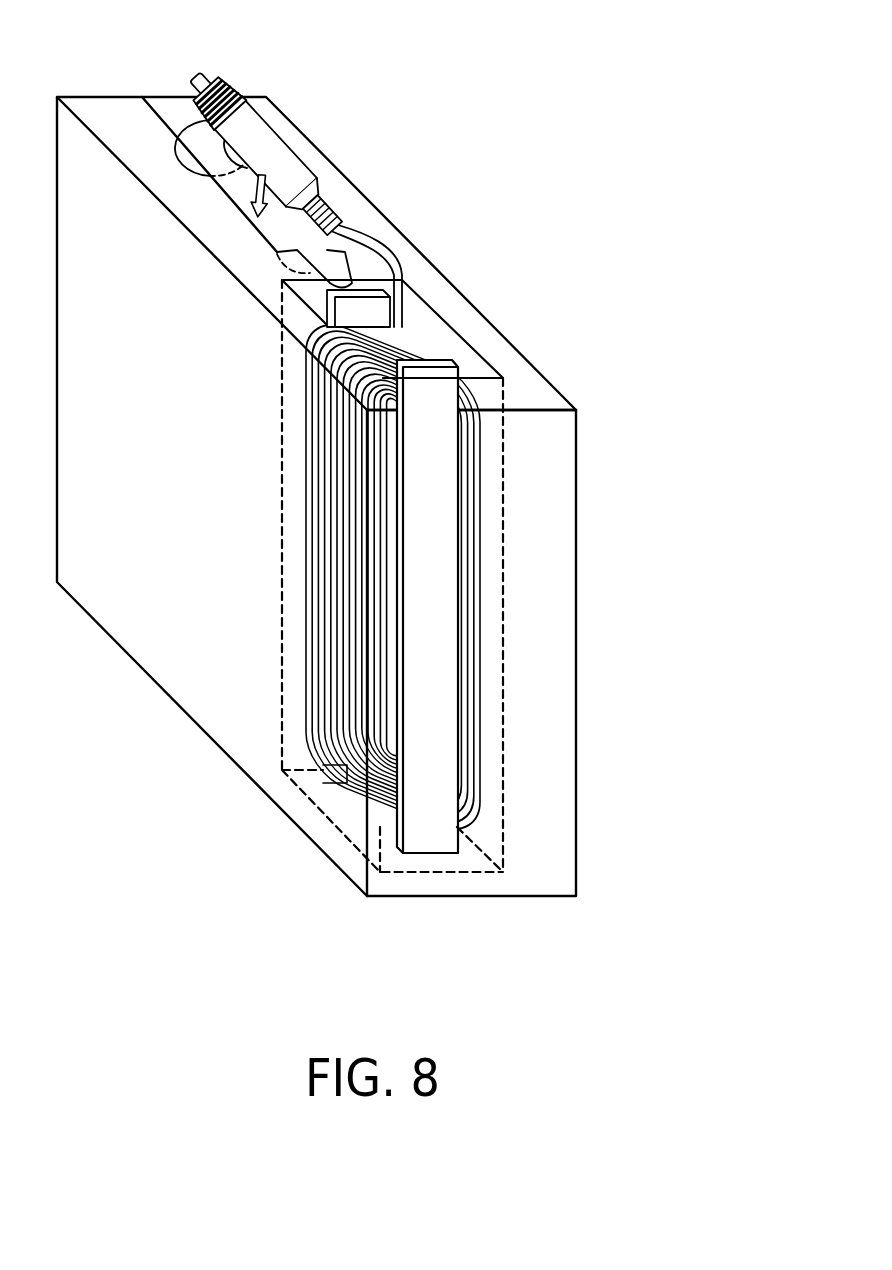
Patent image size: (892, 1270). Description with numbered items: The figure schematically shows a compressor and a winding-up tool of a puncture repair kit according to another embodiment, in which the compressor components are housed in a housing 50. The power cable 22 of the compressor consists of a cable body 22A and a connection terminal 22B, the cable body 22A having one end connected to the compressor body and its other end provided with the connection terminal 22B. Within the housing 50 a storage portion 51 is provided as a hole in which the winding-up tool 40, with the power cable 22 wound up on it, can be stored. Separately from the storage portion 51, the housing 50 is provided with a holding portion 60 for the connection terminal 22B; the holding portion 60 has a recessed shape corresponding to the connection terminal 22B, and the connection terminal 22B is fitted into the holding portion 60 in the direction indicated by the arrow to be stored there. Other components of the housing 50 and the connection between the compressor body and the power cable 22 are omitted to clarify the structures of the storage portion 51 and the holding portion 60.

The power cable 22 is at (437, 137).
The cable body 22A is at (397, 257).
The connection terminal 22B is at (287, 157).
The winding-up tool 40 is at (423, 827).
The housing 50 is at (580, 637).
The storage portion 51 is at (477, 375).
The holding portion 60 is at (198, 147).